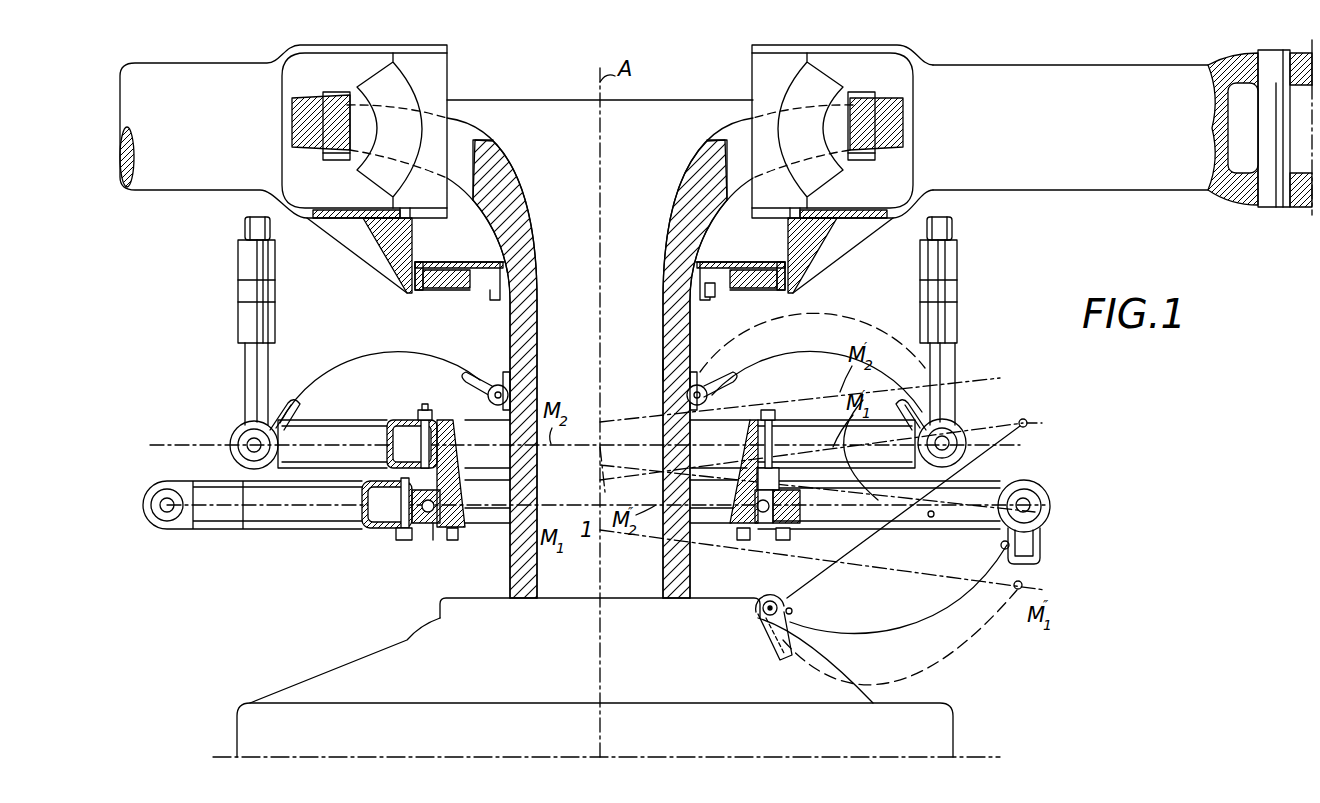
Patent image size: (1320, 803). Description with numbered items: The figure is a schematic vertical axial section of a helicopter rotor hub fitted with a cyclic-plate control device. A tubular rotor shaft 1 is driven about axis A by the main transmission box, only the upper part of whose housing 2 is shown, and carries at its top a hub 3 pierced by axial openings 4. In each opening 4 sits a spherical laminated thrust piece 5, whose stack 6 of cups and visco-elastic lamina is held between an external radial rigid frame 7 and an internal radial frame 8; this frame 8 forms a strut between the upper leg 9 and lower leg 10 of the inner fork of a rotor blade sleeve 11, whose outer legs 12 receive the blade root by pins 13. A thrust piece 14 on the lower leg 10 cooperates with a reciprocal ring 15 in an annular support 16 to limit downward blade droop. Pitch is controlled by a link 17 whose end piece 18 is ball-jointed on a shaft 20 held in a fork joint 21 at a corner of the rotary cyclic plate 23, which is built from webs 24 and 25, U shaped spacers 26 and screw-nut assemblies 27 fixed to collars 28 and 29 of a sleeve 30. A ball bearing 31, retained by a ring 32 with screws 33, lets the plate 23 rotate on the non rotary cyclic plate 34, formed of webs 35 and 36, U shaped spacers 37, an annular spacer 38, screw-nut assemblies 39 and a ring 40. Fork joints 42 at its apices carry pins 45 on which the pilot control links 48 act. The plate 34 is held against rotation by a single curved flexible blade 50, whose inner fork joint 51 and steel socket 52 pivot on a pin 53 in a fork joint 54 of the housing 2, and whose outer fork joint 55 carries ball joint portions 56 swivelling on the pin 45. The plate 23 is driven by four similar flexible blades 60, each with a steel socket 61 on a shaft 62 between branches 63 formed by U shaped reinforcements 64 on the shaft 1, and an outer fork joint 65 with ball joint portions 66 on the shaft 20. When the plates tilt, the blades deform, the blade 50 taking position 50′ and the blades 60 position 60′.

The rotor shaft 1 is at (546, 584).
The housing 2 is at (300, 683).
The hub 3 is at (292, 118).
The axial openings 4 is at (462, 147).
The spherical laminated thrust piece 5 is at (357, 169).
The stack 6 is at (826, 92).
The external radial rigid frame 7 is at (838, 142).
The internal radial frame 8 is at (738, 150).
The upper leg 9 is at (850, 44).
The lower leg 10 is at (866, 208).
The rotor blade sleeve 11 is at (1040, 166).
The legs 12 is at (1305, 207).
The pins 13 is at (1265, 126).
The thrust piece 14 is at (790, 266).
The reciprocal ring 15 is at (718, 262).
The annular support 16 is at (486, 262).
The link 17 is at (240, 253).
The end piece 18 is at (244, 373).
The shaft 20 is at (1019, 423).
The fork joint 21 is at (236, 443).
The rotary cyclic plate 23 is at (367, 391).
The web 24 is at (310, 418).
The web 25 is at (310, 468).
The U shaped spacers 26 is at (384, 420).
The screw-nut assemblies 27 is at (442, 444).
The external radial collar 28 is at (426, 410).
The external radial collar 29 is at (446, 456).
The sleeve 30 is at (452, 480).
The ball bearing 31 is at (436, 527).
The ring 32 is at (458, 540).
The screws 33 is at (740, 538).
The non rotary cyclic plate 34 is at (281, 546).
The web 35 is at (232, 529).
The web 36 is at (333, 529).
The U shaped spacers 37 is at (358, 530).
The annular spacer 38 is at (386, 541).
The screw-nut assemblies 39 is at (368, 503).
The ring 40 is at (408, 541).
The fork joints 42 is at (1014, 484).
The pin 45 is at (1048, 498).
The control links 48 is at (1041, 552).
The flexible blade 50 is at (935, 620).
The position of flexible blade 50′ is at (931, 518).
The fork joint 51 is at (793, 610).
The steel socket 52 is at (776, 600).
The pin 53 is at (764, 598).
The fork joint 54 is at (798, 640).
The fork joint 55 is at (1001, 546).
The spherical skull cap shaped portions 56 is at (1043, 527).
The flexible blades 60 is at (428, 357).
The position of flexible blades 60′ is at (858, 314).
The steel socket 61 is at (698, 384).
The shaft 62 is at (740, 393).
The branches 63 is at (700, 409).
The U shaped reinforcements 64 is at (660, 372).
The fork joint 65 is at (955, 378).
The spherical skull cap shaped portions 66 is at (950, 422).